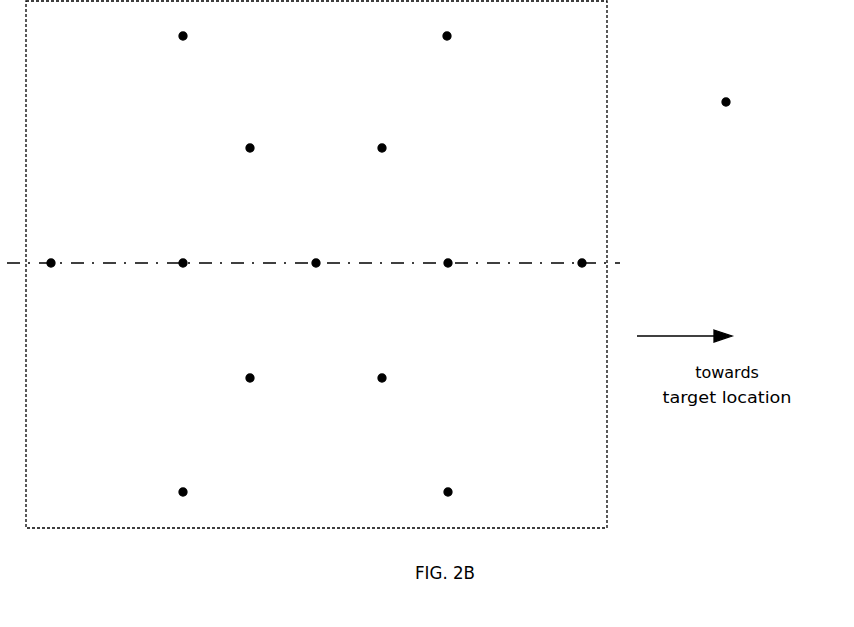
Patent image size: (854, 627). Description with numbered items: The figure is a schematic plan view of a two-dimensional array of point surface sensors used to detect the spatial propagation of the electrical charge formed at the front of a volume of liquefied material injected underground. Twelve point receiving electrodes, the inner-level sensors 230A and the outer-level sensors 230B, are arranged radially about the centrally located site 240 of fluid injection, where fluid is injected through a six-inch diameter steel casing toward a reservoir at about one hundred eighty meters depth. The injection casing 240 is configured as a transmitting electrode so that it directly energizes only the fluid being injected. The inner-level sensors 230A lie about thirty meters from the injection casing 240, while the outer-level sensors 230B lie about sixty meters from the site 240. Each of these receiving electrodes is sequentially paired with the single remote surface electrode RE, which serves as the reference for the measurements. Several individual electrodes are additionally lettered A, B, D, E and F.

The inner-level sensors 230A is at (316, 264).
The outer-level sensors 230B is at (317, 254).
The site of fluid injection 240 is at (316, 255).
The remote surface electrode RE is at (726, 89).